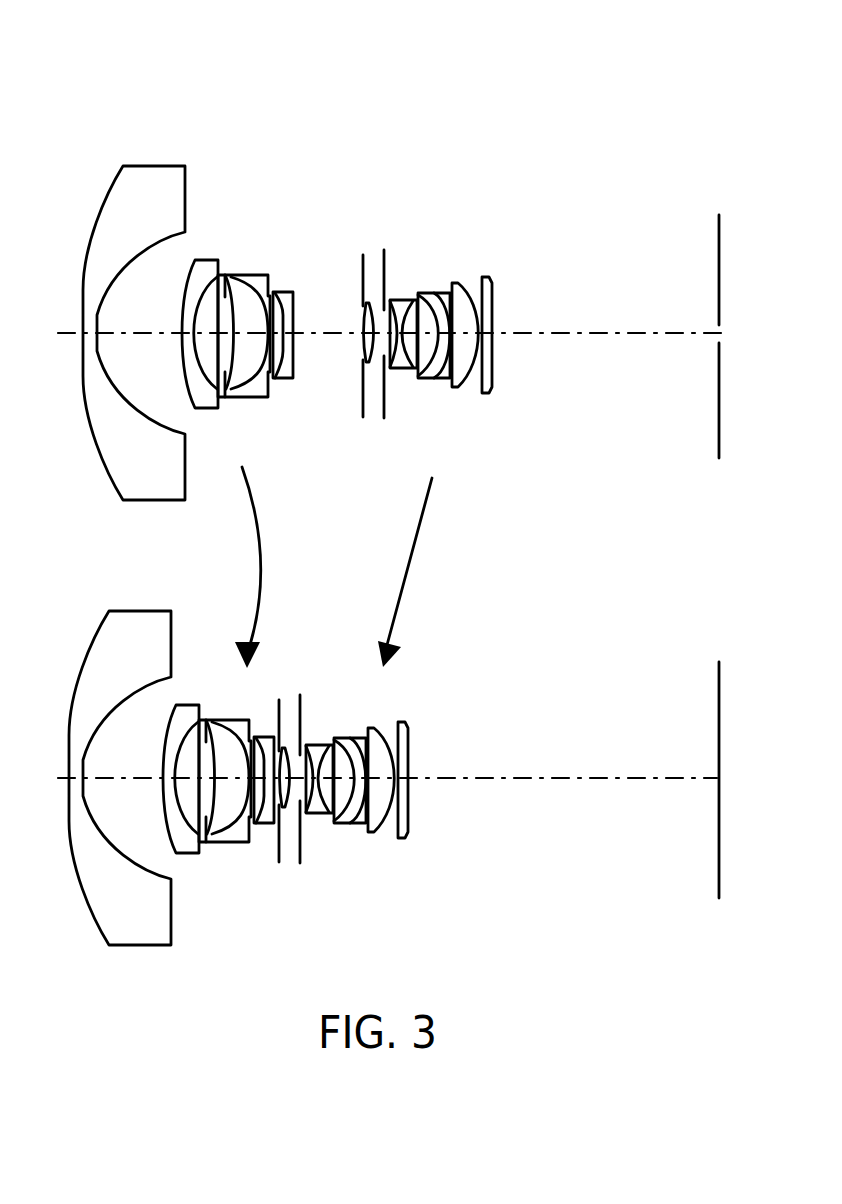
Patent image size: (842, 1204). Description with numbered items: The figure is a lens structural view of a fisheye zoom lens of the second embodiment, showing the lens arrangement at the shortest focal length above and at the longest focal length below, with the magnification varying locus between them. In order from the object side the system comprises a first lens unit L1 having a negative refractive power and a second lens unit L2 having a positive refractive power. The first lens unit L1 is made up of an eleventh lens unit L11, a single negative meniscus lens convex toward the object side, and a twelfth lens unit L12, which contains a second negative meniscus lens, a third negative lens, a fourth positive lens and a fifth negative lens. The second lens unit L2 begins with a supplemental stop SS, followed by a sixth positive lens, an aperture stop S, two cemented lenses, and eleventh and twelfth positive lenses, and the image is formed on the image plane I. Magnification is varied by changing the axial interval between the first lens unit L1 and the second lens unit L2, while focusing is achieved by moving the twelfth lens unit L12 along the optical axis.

The first lens unit L1 is at (298, 83).
The eleventh lens unit L11 is at (185, 157).
The twelfth lens unit L12 is at (298, 157).
The second lens unit L2 is at (510, 83).
The supplemental stop SS is at (358, 229).
The aperture stop S is at (400, 231).
The image plane I is at (708, 178).